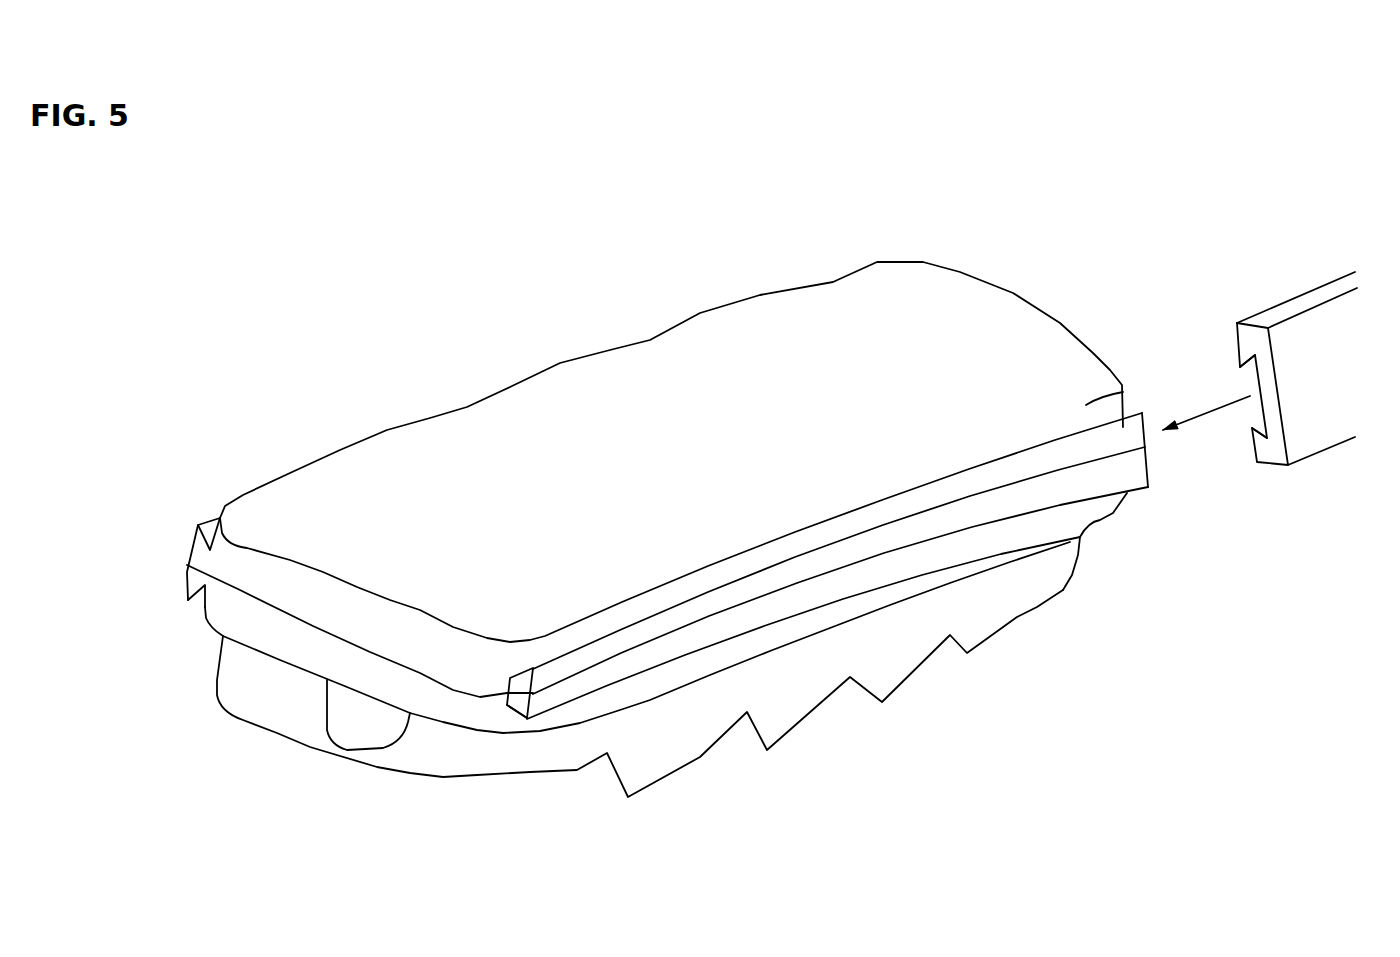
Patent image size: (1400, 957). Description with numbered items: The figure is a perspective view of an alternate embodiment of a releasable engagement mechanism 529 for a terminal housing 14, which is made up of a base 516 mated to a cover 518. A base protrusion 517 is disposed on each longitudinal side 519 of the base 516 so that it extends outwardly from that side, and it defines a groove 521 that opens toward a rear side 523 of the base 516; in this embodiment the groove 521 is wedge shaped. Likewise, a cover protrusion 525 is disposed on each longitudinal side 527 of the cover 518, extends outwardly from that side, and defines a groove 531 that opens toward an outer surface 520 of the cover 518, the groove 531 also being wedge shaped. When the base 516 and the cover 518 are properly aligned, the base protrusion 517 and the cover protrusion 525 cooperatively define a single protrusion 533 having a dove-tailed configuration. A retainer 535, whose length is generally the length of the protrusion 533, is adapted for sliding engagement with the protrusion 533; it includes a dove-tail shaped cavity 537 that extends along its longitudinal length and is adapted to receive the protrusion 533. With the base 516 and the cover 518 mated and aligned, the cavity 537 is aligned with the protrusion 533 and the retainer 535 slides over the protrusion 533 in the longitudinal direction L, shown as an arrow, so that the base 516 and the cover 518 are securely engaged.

The housing 14 is at (534, 350).
The base 516 is at (968, 322).
The base protrusion 517 is at (893, 535).
The cover 518 is at (1023, 633).
The longitudinal side 519 is at (1088, 427).
The outer surface 520 is at (698, 758).
The groove 521 is at (523, 663).
The rear side 523 is at (628, 430).
The cover protrusion 525 is at (583, 687).
The longitudinal side 527 is at (787, 630).
The releasable engagement mechanism 529 is at (1137, 505).
The groove 531 is at (512, 712).
The protrusion 533 is at (200, 614).
The retainer 535 is at (1303, 280).
The cavity 537 is at (1250, 410).
The longitudinal direction L is at (1206, 404).